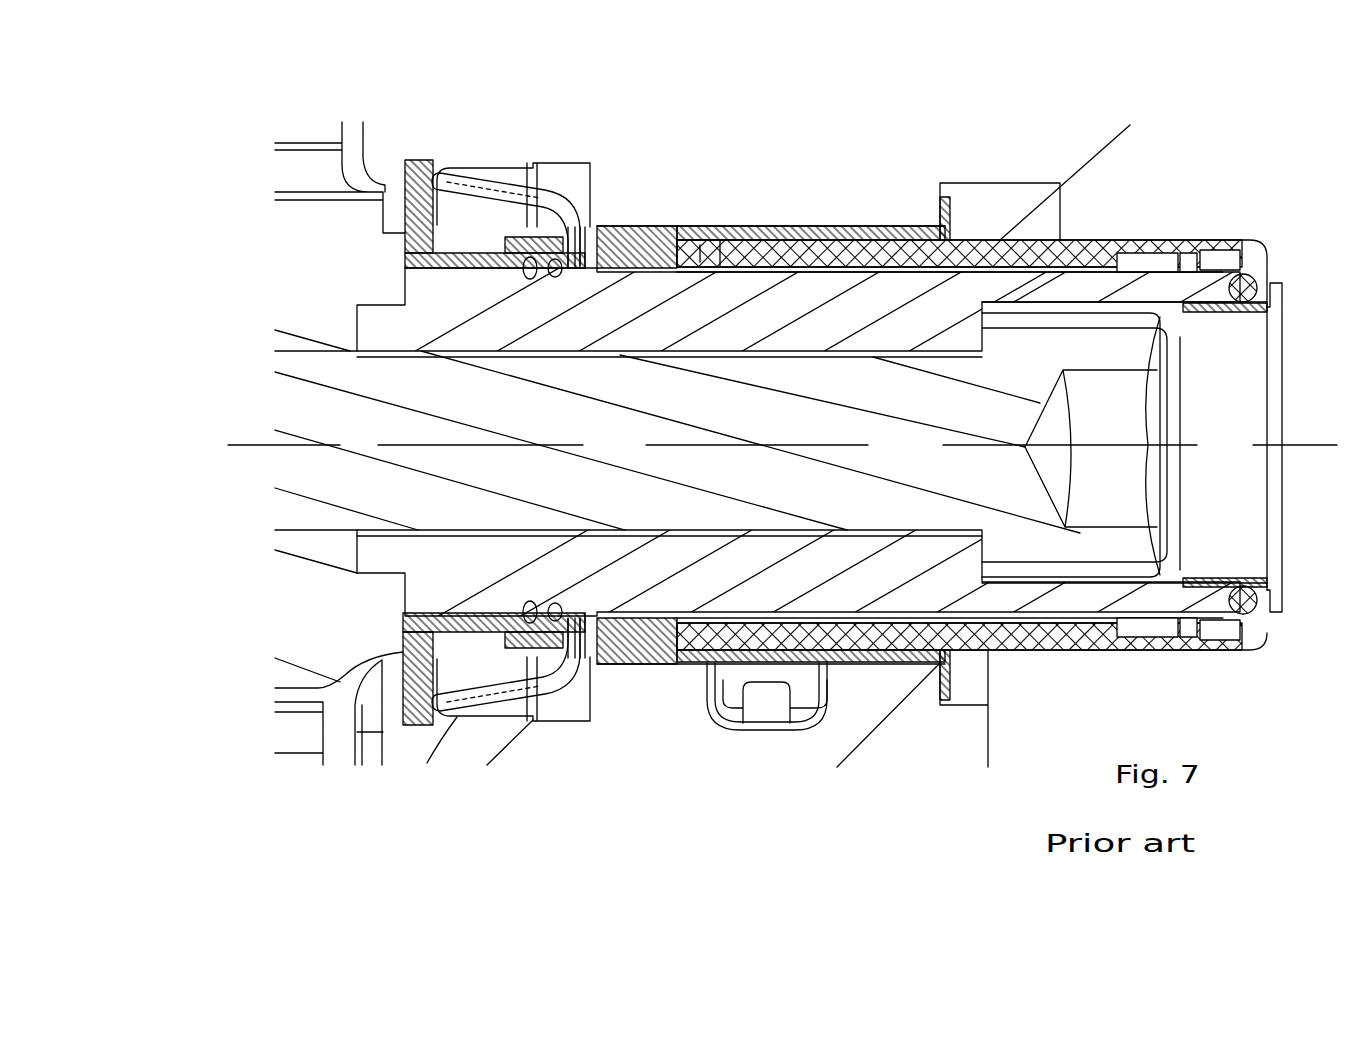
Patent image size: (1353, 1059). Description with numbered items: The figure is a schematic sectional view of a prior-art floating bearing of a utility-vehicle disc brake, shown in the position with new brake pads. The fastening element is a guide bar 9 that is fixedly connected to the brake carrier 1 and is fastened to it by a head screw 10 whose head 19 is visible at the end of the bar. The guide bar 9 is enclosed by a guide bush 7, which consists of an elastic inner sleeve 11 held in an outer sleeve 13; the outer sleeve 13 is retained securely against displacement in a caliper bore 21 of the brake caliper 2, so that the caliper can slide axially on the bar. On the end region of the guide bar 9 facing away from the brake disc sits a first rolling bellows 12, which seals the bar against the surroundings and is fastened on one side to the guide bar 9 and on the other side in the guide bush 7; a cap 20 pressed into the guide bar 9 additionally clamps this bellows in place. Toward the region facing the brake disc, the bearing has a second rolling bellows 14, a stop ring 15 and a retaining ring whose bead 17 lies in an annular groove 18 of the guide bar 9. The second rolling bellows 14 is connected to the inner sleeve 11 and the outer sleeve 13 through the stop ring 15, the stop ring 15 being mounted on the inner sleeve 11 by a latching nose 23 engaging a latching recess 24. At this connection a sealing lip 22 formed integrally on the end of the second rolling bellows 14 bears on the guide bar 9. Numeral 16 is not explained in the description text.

The brake carrier 1 is at (407, 260).
The brake caliper 2 is at (968, 730).
The guide bush 7 is at (758, 207).
The guide bar 9 is at (668, 595).
The head screw 10 is at (910, 372).
The inner sleeve 11 is at (868, 237).
The first rolling bellows 12 is at (1040, 268).
The outer sleeve 13 is at (838, 227).
The second rolling bellows 14 is at (502, 178).
The stop ring 15 is at (623, 227).
The mounting flange 16 is at (420, 160).
The bead 17 is at (545, 237).
The annular groove 18 is at (541, 268).
The head 19 is at (1103, 323).
The cap 20 is at (1197, 557).
The caliper bore 21 is at (790, 223).
The sealing lip 22 is at (606, 658).
The latching nose 23 is at (695, 232).
The latching recess 24 is at (690, 223).